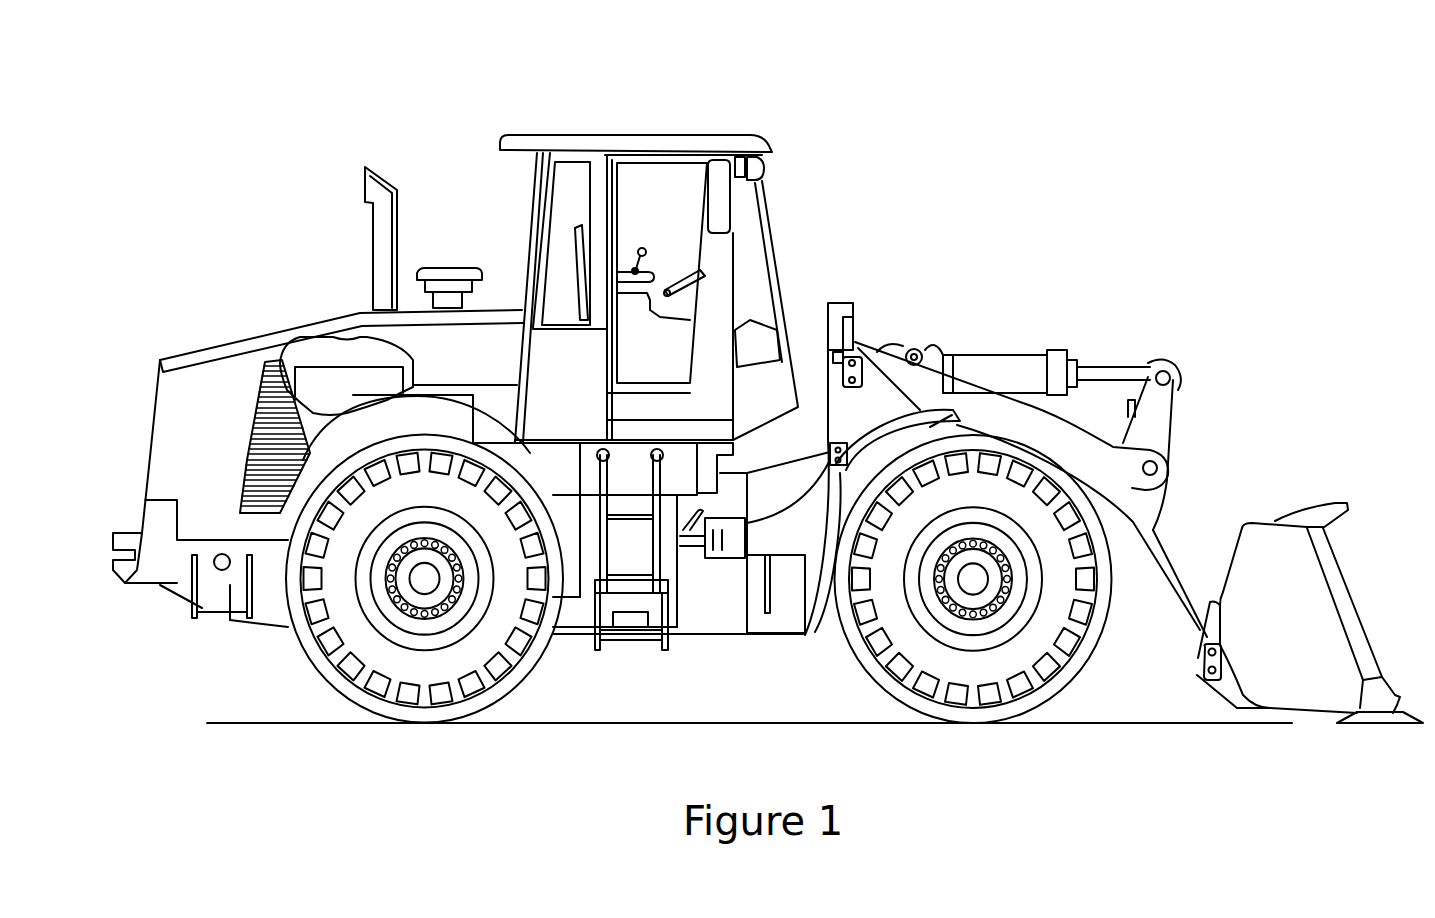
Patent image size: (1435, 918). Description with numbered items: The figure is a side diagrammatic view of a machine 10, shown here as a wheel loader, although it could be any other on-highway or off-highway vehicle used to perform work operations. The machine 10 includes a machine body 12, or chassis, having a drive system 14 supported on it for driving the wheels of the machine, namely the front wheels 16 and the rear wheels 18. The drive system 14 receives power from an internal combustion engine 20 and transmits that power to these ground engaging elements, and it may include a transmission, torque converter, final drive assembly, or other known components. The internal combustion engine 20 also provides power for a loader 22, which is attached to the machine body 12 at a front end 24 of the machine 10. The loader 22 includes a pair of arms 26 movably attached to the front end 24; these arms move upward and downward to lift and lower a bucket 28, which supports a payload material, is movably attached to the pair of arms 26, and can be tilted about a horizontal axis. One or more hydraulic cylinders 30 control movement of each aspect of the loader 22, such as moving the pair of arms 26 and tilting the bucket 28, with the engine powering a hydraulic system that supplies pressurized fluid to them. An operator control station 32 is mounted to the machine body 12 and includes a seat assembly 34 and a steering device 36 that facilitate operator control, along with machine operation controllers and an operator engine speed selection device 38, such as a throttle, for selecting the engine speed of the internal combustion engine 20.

The machine 10 is at (1195, 88).
The machine body 12 is at (578, 620).
The drive system 14 is at (693, 595).
The front wheels 16 is at (977, 702).
The rear wheels 18 is at (415, 702).
The internal combustion engine 20 is at (330, 368).
The loader 22 is at (1173, 633).
The front end 24 is at (953, 122).
The pair of arms 26 is at (1130, 535).
The bucket 28 is at (1305, 703).
The hydraulic cylinders 30 is at (1013, 362).
The operator control station 32 is at (690, 137).
The seat assembly 34 is at (678, 346).
The steering device 36 is at (692, 276).
The operator engine speed selection device 38 is at (640, 247).